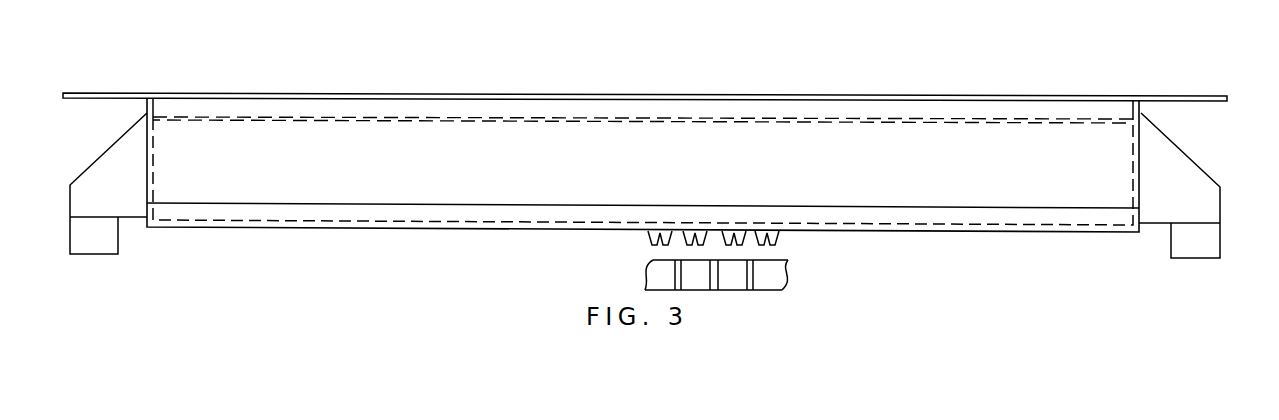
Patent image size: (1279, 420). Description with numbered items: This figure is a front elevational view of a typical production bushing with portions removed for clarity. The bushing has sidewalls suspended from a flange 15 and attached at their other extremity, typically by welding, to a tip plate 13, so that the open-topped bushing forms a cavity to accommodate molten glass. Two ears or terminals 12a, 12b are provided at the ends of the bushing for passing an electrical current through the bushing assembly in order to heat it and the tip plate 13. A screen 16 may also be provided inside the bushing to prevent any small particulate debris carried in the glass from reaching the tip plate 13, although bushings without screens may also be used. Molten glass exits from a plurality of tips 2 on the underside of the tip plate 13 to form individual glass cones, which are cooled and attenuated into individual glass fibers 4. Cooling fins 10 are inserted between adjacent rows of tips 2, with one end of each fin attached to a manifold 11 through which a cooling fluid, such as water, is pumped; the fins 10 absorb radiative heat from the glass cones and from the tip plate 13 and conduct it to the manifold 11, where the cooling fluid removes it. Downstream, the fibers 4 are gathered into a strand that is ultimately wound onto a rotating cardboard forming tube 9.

The tips 2 is at (781, 233).
The glass fibers 4 is at (65, 18).
The forming tube 9 is at (960, 306).
The cooling fins 10 is at (753, 282).
The manifold 11 is at (790, 275).
The ear or terminal 12a is at (97, 158).
The ear or terminal 12b is at (1190, 158).
The tip plate 13 is at (510, 210).
The flange 15 is at (1183, 95).
The screen 16 is at (726, 123).